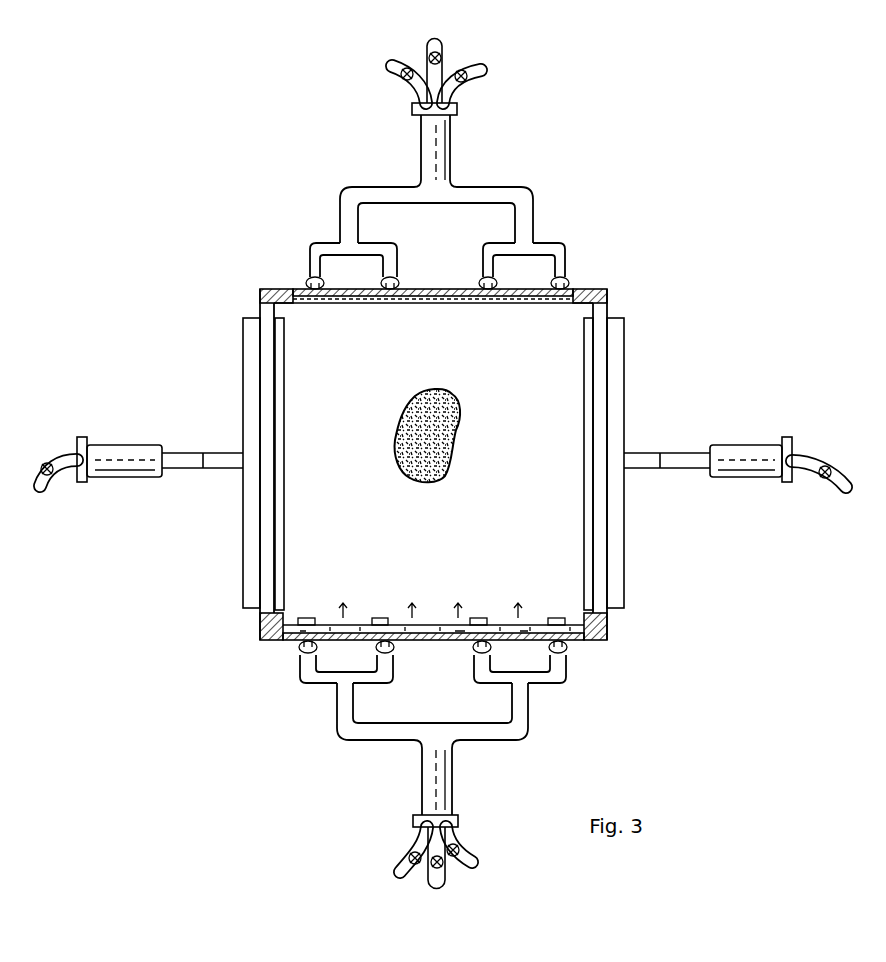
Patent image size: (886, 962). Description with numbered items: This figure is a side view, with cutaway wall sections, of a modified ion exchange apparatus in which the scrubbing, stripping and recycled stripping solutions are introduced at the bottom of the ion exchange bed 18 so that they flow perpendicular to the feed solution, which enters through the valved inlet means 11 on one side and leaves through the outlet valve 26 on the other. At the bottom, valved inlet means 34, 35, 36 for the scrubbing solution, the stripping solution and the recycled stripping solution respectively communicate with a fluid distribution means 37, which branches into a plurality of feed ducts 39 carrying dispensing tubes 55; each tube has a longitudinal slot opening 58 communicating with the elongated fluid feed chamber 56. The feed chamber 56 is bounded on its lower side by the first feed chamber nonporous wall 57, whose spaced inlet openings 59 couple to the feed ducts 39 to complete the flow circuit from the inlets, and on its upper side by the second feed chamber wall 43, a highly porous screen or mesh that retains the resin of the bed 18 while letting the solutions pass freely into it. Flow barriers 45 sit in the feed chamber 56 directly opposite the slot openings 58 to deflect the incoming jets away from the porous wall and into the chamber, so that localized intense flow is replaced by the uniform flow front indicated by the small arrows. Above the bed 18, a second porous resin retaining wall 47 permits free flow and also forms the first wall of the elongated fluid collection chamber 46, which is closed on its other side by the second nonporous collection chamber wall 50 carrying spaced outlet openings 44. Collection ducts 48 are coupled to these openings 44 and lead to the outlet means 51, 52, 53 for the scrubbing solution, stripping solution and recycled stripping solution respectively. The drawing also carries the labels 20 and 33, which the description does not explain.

The valved inlet means 11 is at (37, 470).
The ion exchange bed 18 is at (394, 437).
The treatment chamber 20 is at (501, 458).
The outlet valve 26 is at (818, 461).
The electrode plate 33 is at (284, 366).
The valved inlet means 34 is at (398, 866).
The valved inlet means 35 is at (442, 879).
The valved inlet means 36 is at (472, 860).
The fluid distribution means 37 is at (422, 782).
The feed ducts 39 is at (303, 657).
The second feed chamber wall 43 is at (500, 627).
The outlet openings 44 is at (397, 296).
The flow barriers 45 is at (590, 637).
The fluid collection chamber 46 is at (582, 294).
The second porous resin retaining wall 47 is at (547, 313).
The collection ducts 48 is at (566, 283).
The second nonporous collection chamber wall 50 is at (545, 290).
The outlet means 51 is at (388, 66).
The outlet means 52 is at (430, 44).
The outlet means 53 is at (483, 63).
The dispensing tubes 55 is at (300, 650).
The fluid feed chamber 56 is at (586, 642).
The first feed chamber nonporous wall 57 is at (572, 652).
The longitudinal slot opening 58 is at (373, 656).
The inlet openings 59 is at (478, 651).